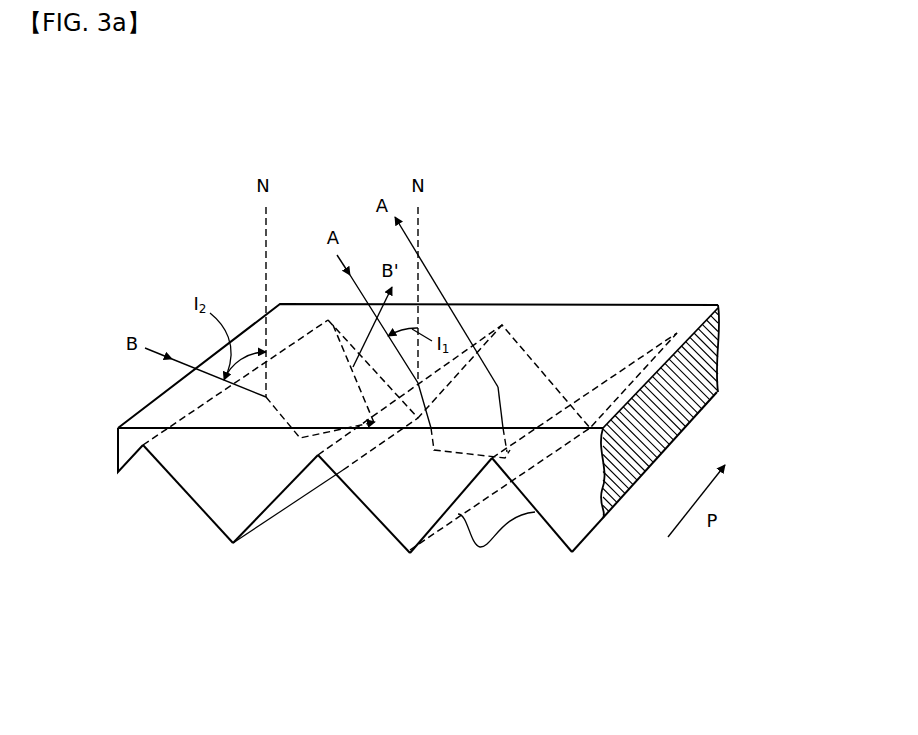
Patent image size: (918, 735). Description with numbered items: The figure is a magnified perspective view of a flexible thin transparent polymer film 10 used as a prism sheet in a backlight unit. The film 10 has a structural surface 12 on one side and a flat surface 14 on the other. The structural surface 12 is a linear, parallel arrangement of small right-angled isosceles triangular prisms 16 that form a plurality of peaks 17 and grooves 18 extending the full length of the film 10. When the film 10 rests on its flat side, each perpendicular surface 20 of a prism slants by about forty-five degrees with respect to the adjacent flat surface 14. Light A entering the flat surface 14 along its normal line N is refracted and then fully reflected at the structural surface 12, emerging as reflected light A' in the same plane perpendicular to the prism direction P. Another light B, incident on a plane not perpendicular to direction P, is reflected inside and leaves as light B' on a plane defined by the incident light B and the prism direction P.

The film 10 is at (622, 286).
The structural surface 12 is at (550, 534).
The flat surface 14 is at (557, 313).
The prism 16 is at (207, 502).
The peak 17 is at (233, 547).
The groove 18 is at (318, 460).
The perpendicular surface 20 is at (496, 544).